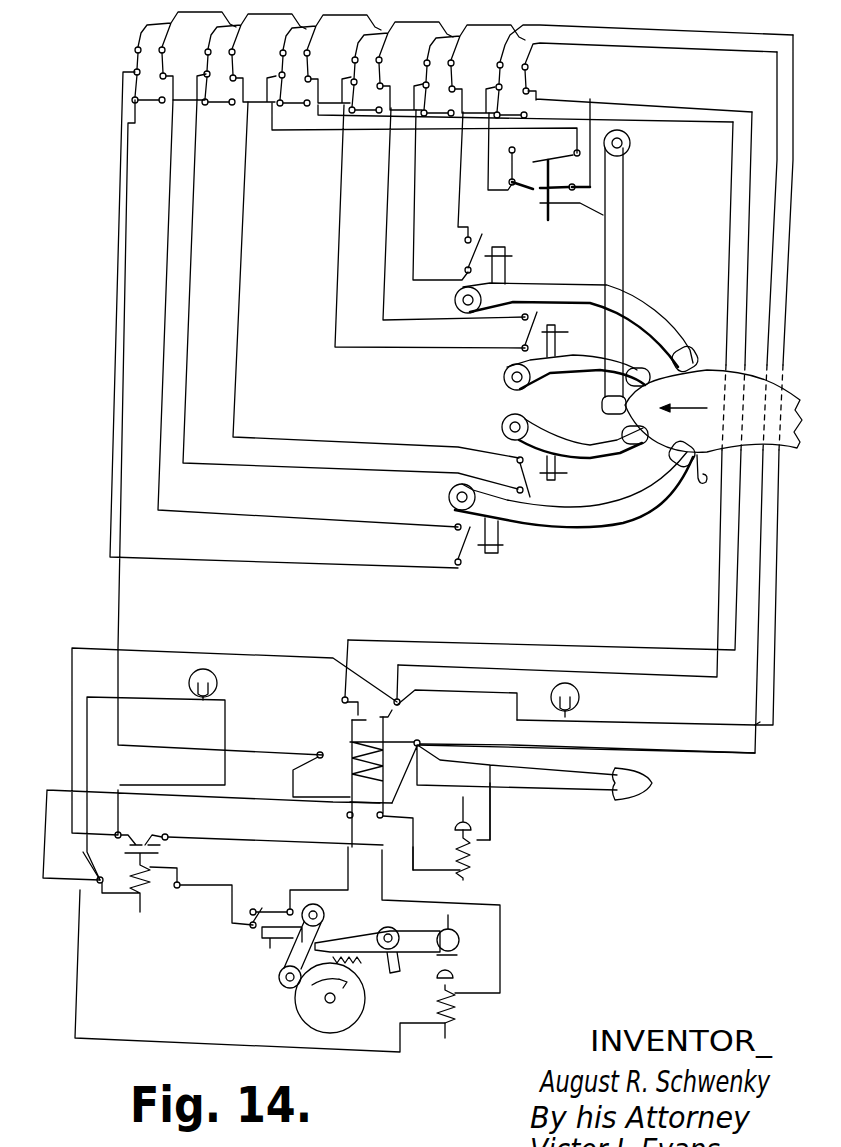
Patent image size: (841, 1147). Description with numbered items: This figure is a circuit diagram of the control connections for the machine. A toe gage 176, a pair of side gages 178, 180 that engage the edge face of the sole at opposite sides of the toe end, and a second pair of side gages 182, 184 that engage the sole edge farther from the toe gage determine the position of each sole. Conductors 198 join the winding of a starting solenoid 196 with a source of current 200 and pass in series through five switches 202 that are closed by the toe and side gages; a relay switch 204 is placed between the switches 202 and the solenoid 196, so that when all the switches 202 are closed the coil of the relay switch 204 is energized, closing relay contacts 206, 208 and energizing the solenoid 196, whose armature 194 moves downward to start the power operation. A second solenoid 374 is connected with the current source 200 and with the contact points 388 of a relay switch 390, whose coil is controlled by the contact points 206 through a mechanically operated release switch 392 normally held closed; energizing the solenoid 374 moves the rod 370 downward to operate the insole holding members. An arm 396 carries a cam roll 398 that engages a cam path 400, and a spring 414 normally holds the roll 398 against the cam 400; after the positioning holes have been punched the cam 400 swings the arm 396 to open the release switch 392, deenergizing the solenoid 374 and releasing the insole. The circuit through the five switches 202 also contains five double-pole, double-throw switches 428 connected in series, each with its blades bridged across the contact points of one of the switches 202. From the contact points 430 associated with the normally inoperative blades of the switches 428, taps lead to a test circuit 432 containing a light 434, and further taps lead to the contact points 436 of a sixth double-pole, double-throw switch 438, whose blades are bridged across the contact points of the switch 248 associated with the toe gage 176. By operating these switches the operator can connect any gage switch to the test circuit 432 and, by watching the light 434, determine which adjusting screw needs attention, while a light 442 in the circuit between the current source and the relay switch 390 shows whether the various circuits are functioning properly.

The contact points 430 is at (160, 49).
The double-pole, double-throw switch 428 is at (157, 77).
The contact points 436 is at (528, 65).
The sixth double-pole, double-throw switch 438 is at (526, 93).
The switch 202 is at (545, 152).
The switch 248 is at (533, 197).
The toe gage 176 is at (621, 227).
The side gage 184 is at (640, 303).
The side gage 180 is at (630, 368).
The side gage 178 is at (592, 449).
The side gage 182 is at (617, 515).
The light 442 is at (213, 672).
The light 434 is at (576, 694).
The test circuit 432 is at (707, 727).
The relay contacts 206 is at (348, 714).
The relay contacts 208 is at (390, 717).
The relay switch 204 is at (350, 746).
The source of supply of current 200 is at (652, 783).
The armature 194 is at (463, 805).
The solenoid 196 is at (470, 857).
The conductors 198 is at (491, 805).
The contact points 388 is at (133, 833).
The relay switch 390 is at (148, 893).
The release switch 392 is at (258, 908).
The arm 396 is at (292, 956).
The cam roll 398 is at (280, 983).
The spring 414 is at (362, 963).
The rod 370 is at (457, 965).
The solenoid 374 is at (458, 1008).
The cam path 400 is at (347, 1020).